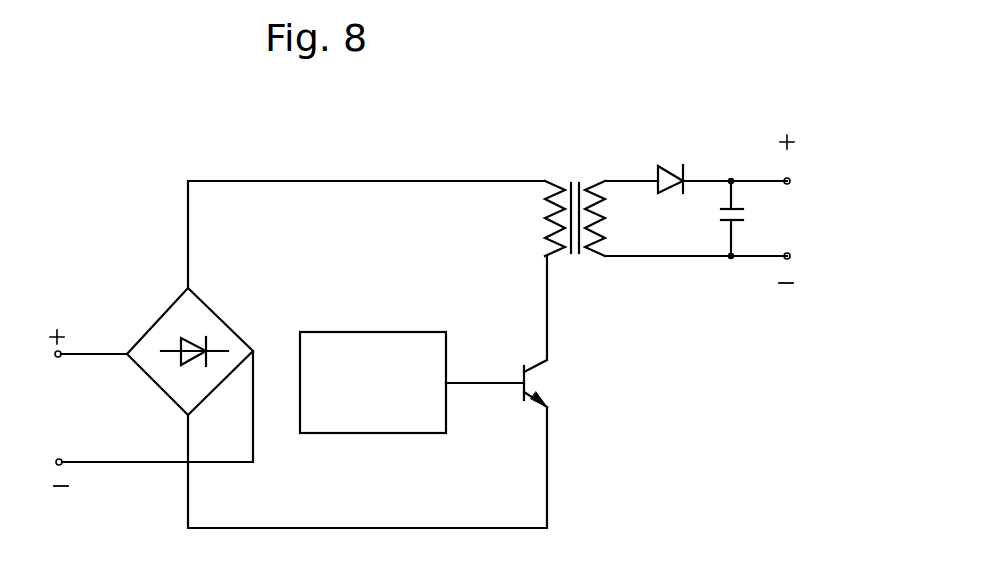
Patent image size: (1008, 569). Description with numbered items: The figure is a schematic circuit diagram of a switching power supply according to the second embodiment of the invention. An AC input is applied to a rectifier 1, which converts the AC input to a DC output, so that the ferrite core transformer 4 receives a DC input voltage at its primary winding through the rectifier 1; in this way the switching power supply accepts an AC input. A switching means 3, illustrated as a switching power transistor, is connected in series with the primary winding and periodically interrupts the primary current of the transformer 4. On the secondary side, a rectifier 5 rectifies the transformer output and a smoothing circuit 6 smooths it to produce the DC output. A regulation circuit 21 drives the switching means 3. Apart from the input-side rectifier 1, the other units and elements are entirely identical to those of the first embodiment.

The rectifier 1 is at (212, 302).
The regulation circuit 21 is at (380, 350).
The switching means 3 is at (550, 387).
The transformer 4 is at (575, 172).
The rectifier 5 is at (672, 160).
The smoothing circuit 6 is at (720, 216).